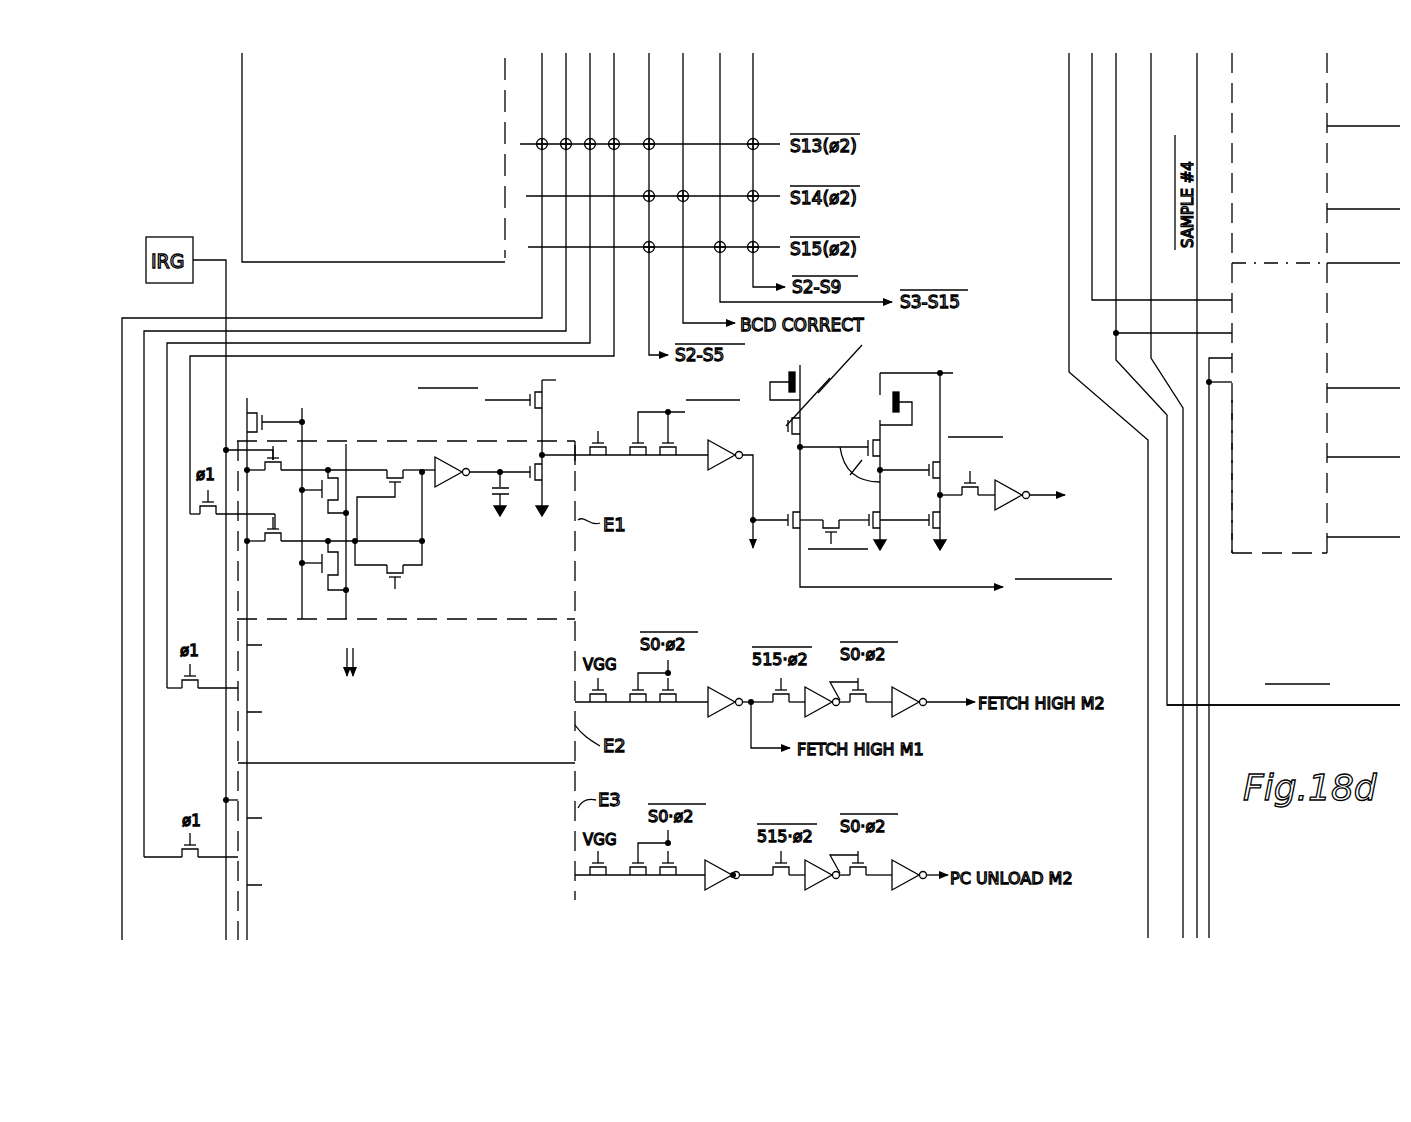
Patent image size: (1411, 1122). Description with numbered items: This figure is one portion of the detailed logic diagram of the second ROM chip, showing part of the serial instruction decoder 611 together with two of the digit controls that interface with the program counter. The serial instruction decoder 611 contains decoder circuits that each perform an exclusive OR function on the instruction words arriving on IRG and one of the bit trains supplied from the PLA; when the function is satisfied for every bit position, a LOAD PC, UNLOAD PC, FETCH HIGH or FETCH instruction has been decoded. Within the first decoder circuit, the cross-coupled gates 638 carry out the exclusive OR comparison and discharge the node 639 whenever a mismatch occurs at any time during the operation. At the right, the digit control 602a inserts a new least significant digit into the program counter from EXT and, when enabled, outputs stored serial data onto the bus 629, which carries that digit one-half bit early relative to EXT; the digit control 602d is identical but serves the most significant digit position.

The cross-coupled gates 638 is at (435, 579).
The node 639 is at (548, 478).
The serial instruction decoder 611 is at (690, 571).
The digit control 602d is at (1310, 174).
The digit control 602a is at (1308, 406).
The bus 629 is at (1246, 705).